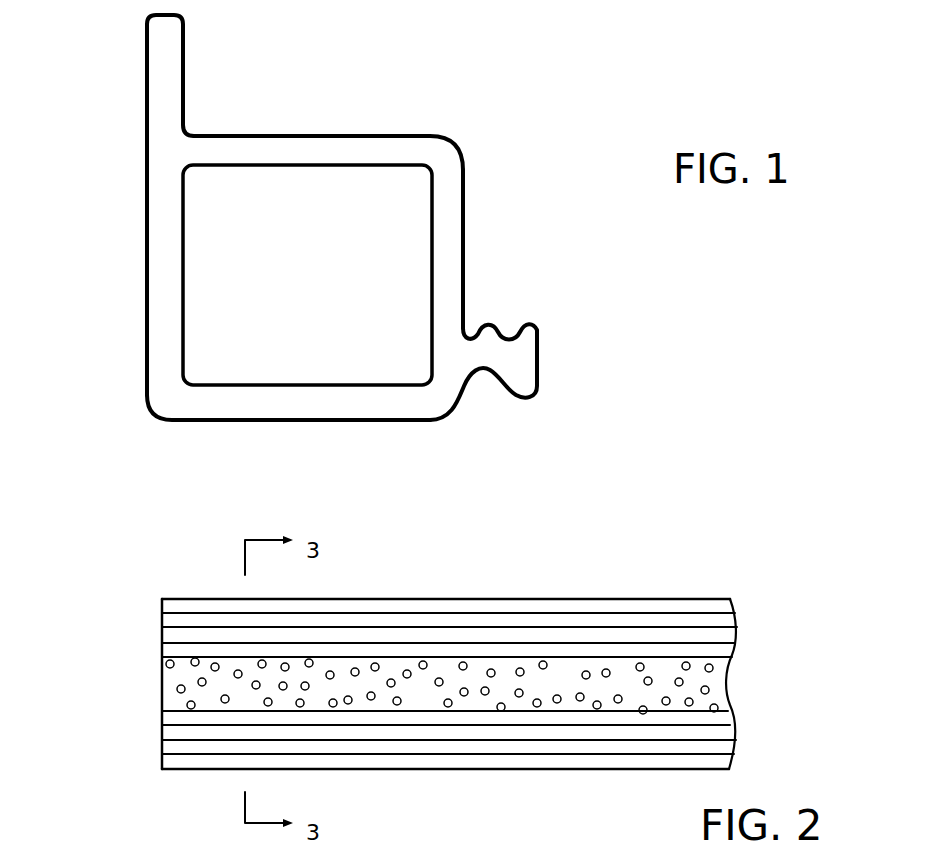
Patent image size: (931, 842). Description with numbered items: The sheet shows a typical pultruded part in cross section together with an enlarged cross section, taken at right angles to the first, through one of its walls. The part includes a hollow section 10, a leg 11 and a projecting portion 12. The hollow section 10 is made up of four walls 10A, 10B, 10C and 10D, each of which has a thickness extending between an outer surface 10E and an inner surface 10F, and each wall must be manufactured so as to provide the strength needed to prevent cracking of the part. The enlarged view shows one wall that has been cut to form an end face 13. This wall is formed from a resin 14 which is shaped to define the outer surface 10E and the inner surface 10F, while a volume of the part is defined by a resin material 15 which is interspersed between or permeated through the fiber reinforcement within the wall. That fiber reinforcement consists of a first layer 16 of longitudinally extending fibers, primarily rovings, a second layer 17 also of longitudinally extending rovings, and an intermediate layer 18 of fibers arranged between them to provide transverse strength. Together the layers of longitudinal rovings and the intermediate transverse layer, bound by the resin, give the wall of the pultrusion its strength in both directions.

In FIG. 1, the hollow section 10 is at (446, 121).
In FIG. 1, the wall 10A is at (322, 146).
In FIG. 1, the wall 10B is at (150, 258).
In FIG. 1, the wall 10C is at (287, 400).
In FIG. 1, the wall 10D is at (454, 258).
In FIG. 1, the outer surface 10E is at (281, 132).
In FIG. 2, the outer surface 10E is at (513, 595).
In FIG. 1, the inner surface 10F is at (290, 170).
In FIG. 2, the inner surface 10F is at (559, 780).
In FIG. 1, the leg 11 is at (187, 61).
In FIG. 1, the projecting portion 12 is at (540, 325).
In FIG. 2, the end face 13 is at (147, 705).
In FIG. 2, the resin 14 is at (712, 680).
In FIG. 2, the resin material 15 is at (690, 600).
In FIG. 2, the first layer 16 is at (208, 752).
In FIG. 2, the second layer 17 is at (197, 612).
In FIG. 2, the intermediate layer 18 is at (166, 672).